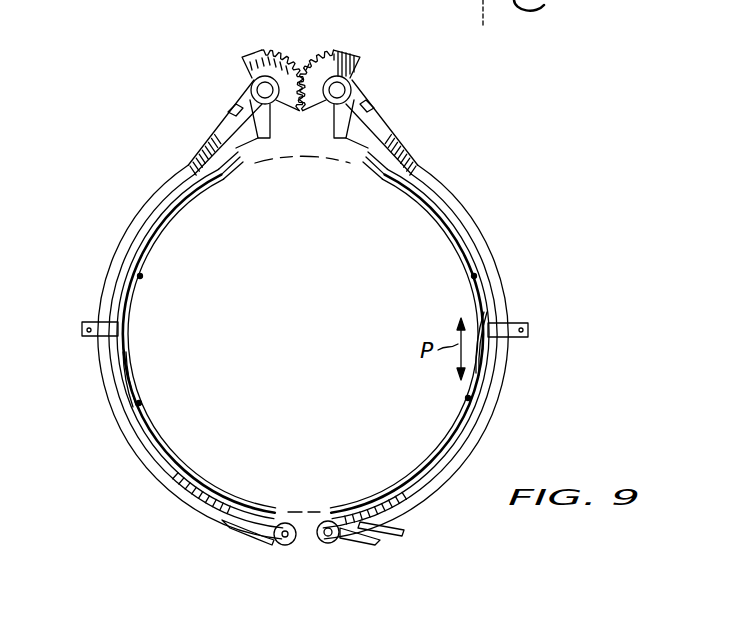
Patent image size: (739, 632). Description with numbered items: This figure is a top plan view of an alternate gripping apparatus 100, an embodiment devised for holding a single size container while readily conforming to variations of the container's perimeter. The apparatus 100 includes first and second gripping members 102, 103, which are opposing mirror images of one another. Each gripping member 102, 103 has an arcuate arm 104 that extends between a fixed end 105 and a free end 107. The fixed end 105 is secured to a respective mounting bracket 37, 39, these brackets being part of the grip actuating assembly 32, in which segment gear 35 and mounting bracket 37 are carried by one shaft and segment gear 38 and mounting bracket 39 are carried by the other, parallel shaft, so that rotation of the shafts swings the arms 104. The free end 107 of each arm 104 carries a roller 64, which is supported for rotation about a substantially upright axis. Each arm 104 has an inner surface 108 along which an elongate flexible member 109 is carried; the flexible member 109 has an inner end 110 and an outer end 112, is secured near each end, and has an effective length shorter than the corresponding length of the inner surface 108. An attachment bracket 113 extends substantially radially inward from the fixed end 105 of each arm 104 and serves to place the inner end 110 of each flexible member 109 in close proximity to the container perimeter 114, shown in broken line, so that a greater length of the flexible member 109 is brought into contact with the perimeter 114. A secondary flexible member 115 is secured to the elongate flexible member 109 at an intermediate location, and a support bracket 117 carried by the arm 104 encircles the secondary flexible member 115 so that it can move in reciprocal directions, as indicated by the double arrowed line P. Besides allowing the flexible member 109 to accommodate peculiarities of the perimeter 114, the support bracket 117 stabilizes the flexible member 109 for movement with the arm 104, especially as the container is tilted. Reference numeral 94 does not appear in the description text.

The grip actuating assembly 32 is at (316, 48).
The segment gear 35 is at (352, 52).
The mounting bracket 37 is at (352, 94).
The segment gear 38 is at (290, 52).
The mounting bracket 39 is at (250, 88).
The roller 64 is at (292, 514).
The roller 94 is at (566, 8).
The gripping apparatus 100 is at (440, 176).
The first gripping member 102 is at (130, 222).
The second gripping member 103 is at (480, 228).
The arcuate arm 104 is at (104, 264).
The fixed end 105 is at (228, 118).
The free end 107 is at (270, 540).
The inner surface 108 is at (450, 216).
The elongate flexible member 109 is at (165, 230).
The inner end 110 is at (212, 166).
The outer end 112 is at (410, 524).
The attachment bracket 113 is at (328, 116).
The perimeter 114 is at (266, 164).
The secondary flexible member 115 is at (125, 348).
The support bracket 117 is at (82, 326).